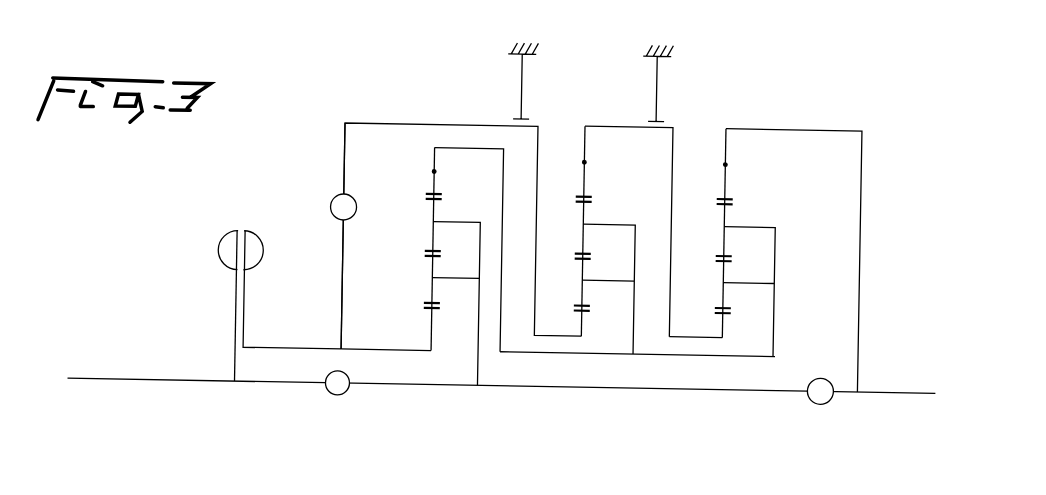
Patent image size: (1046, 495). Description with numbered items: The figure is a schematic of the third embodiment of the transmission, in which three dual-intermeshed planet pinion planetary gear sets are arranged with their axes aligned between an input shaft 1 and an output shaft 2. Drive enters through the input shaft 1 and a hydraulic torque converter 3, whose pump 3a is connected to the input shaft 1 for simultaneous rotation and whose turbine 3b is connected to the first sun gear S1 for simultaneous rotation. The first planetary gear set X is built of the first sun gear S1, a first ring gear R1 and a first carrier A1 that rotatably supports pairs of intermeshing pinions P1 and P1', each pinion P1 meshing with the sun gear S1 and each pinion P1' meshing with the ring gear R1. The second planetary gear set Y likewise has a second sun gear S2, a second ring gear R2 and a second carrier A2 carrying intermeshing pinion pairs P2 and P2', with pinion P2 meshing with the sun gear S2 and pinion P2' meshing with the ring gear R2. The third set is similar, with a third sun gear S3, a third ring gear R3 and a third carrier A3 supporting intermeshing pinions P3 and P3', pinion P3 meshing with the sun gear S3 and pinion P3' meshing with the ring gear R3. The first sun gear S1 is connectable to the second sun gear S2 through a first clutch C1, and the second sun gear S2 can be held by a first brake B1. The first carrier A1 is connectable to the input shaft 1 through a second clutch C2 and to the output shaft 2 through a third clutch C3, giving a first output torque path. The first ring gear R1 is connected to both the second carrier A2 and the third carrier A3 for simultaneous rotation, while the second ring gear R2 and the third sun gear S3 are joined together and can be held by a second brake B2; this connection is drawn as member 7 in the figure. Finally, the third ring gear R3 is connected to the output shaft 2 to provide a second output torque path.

The input shaft 1 is at (152, 383).
The output shaft 2 is at (902, 383).
The hydraulic torque converter 3 is at (215, 247).
The pump 3a is at (228, 270).
The turbine 3b is at (258, 267).
The connecting member between gear units 7 is at (737, 333).
The first planetary gear set X is at (449, 332).
The second planetary gear set Y is at (597, 336).
The first clutch C1 is at (334, 197).
The second clutch C2 is at (355, 395).
The third clutch C3 is at (833, 397).
The first brake B1 is at (518, 112).
The second brake B2 is at (660, 112).
The first ring gear R1 is at (438, 171).
The second ring gear R2 is at (588, 158).
The third ring gear R3 is at (729, 158).
The first carrier A1 is at (483, 244).
The second carrier A2 is at (638, 250).
The third carrier A3 is at (779, 240).
The pinion P1' is at (410, 221).
The pinion P1 is at (407, 276).
The first sun gear S1 is at (435, 328).
The pinion P2' is at (609, 212).
The pinion P2 is at (601, 284).
The second sun gear S2 is at (587, 324).
The pinion P3' is at (707, 218).
The pinion P3 is at (766, 278).
The third sun gear S3 is at (727, 320).